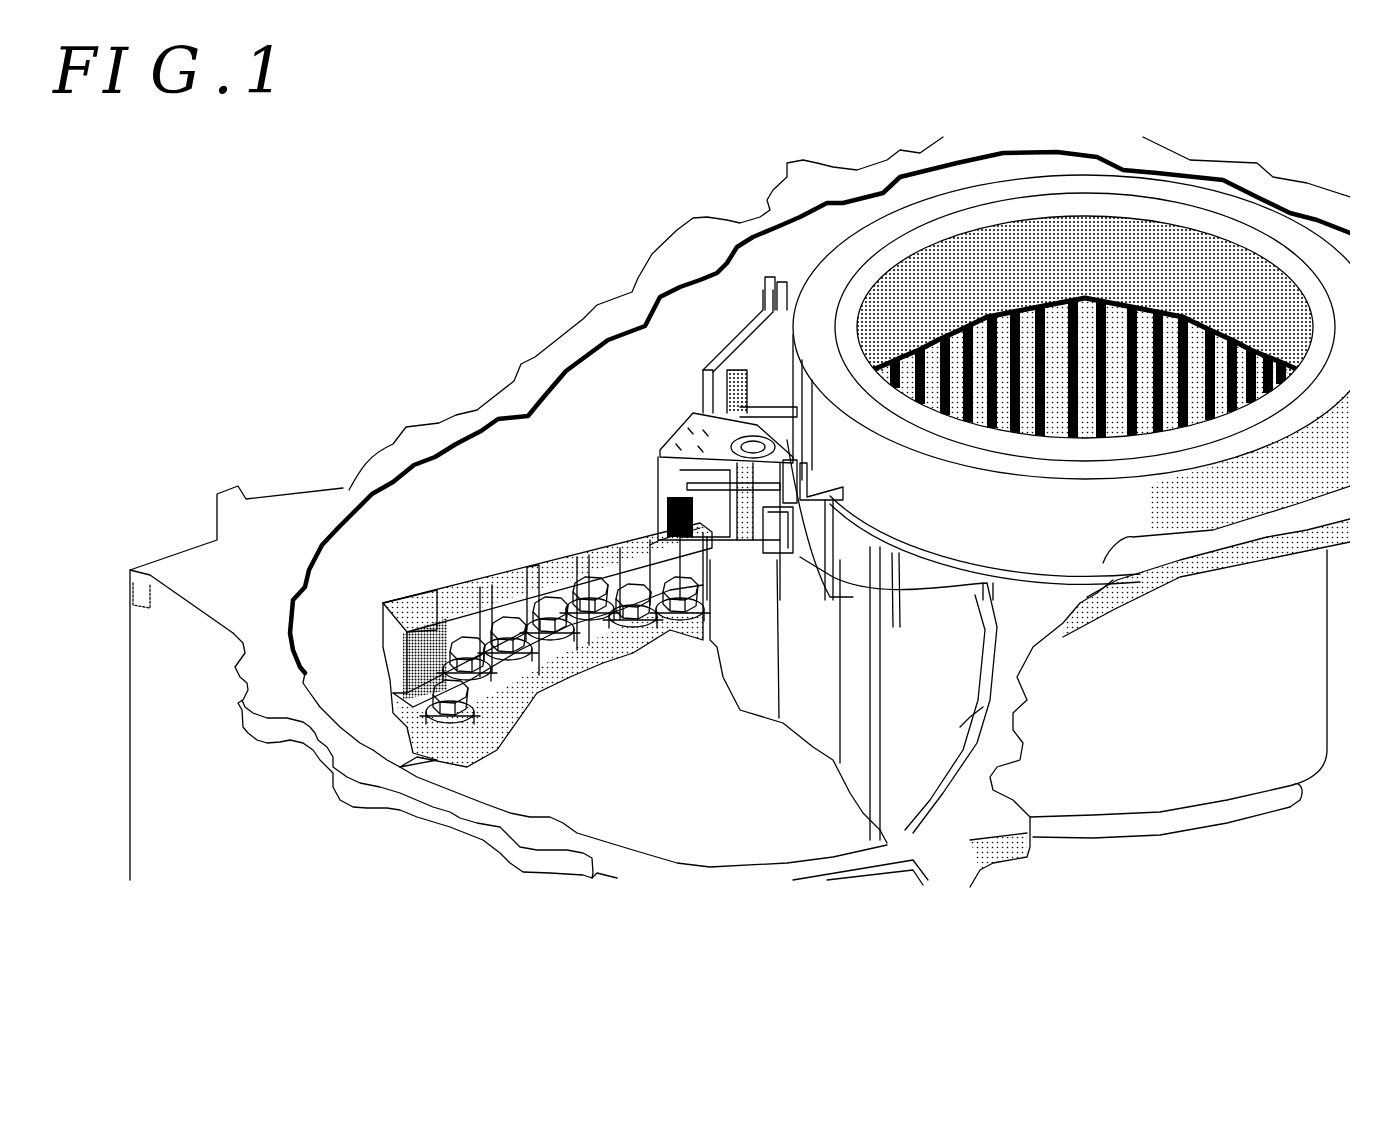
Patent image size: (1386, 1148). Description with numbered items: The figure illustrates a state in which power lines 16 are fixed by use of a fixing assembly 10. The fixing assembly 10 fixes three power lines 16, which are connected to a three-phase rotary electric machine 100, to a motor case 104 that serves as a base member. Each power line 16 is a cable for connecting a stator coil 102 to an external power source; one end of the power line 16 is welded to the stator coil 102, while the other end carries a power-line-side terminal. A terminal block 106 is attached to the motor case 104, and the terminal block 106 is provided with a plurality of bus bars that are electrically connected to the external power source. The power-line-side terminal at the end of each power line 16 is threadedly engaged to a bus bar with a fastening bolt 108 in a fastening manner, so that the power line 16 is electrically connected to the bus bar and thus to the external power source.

The fixing assembly 10 is at (654, 540).
The power line 16 is at (748, 365).
The three-phase rotary electric machine 100 is at (947, 207).
The stator coil 102 is at (778, 277).
The motor case 104 is at (345, 490).
The terminal block 106 is at (560, 577).
The fastening bolt 108 is at (533, 563).